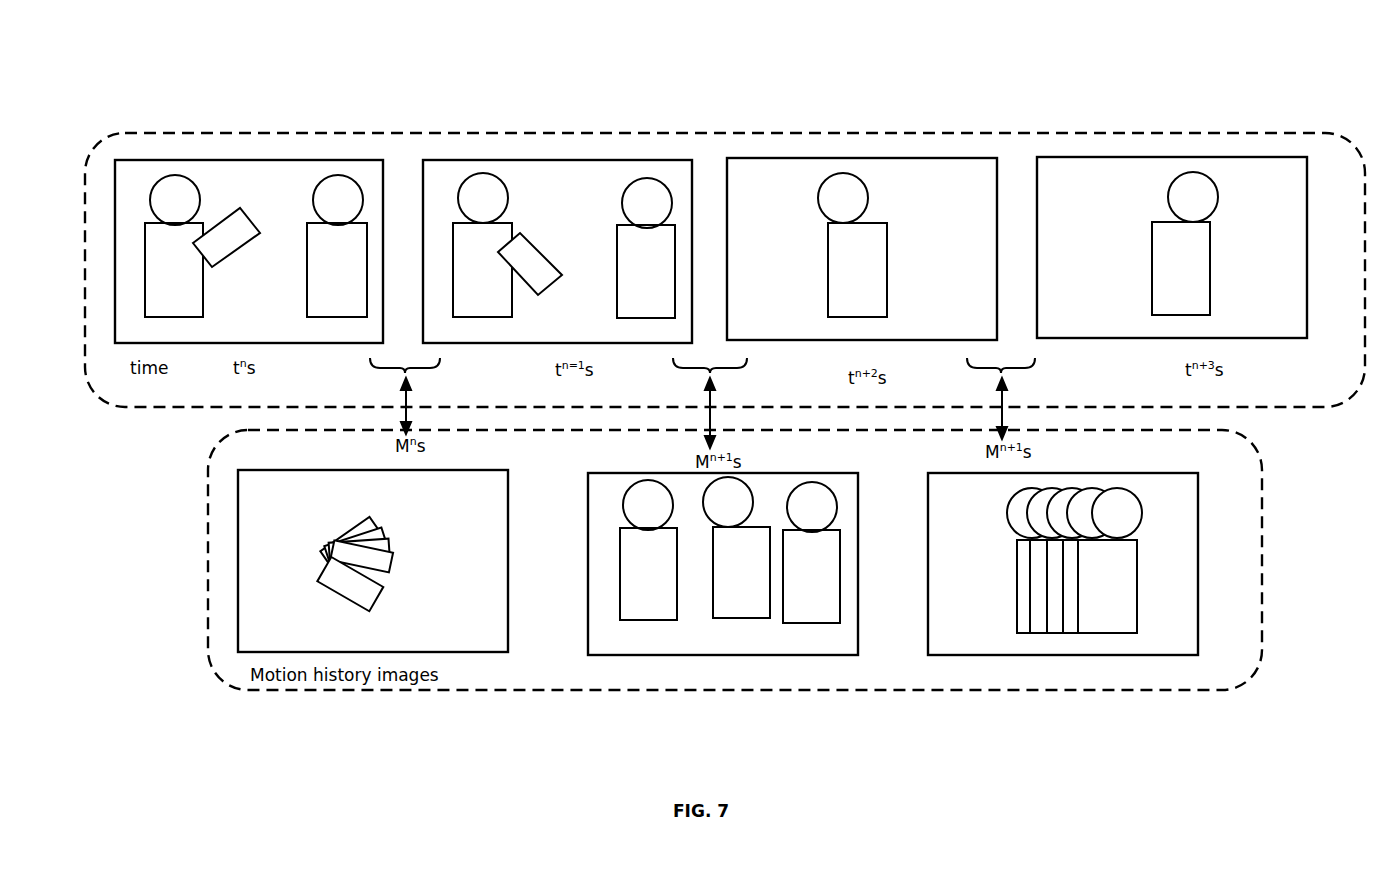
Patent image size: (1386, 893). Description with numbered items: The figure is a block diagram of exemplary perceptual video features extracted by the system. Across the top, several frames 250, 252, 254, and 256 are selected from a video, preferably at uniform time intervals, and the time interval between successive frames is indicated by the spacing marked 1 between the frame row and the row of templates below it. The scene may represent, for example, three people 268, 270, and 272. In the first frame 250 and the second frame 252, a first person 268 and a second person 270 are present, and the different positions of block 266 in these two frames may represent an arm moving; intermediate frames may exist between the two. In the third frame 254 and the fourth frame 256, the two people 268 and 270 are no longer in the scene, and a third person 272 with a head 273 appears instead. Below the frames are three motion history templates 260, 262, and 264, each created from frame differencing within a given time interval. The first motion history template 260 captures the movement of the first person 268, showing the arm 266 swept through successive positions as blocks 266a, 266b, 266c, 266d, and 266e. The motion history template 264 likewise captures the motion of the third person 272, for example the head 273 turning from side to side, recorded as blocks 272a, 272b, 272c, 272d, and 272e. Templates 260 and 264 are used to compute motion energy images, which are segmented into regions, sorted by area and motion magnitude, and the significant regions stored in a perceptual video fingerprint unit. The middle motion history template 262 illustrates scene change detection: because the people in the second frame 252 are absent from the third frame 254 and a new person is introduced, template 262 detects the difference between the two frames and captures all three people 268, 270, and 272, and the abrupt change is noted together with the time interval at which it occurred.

The time interval 1 is at (833, 402).
The first frame 250 is at (248, 160).
The second frame 252 is at (560, 160).
The third frame 254 is at (860, 158).
The fourth frame 256 is at (1170, 157).
The first motion history template 260 is at (445, 652).
The motion history template 262 is at (795, 655).
The motion history template 264 is at (1155, 655).
The block 266 is at (248, 219).
The block 266a is at (335, 537).
The block 266b is at (385, 538).
The block 266c is at (393, 567).
The block 266d is at (388, 577).
The block 266e is at (360, 607).
The first person 268 is at (203, 288).
The second person 270 is at (307, 272).
The third person 272 is at (828, 270).
The block 272a is at (1025, 597).
The block 272b is at (1040, 610).
The block 272c is at (1057, 610).
The block 272d is at (1070, 615).
The block 272e is at (1110, 588).
The head 273 is at (818, 197).